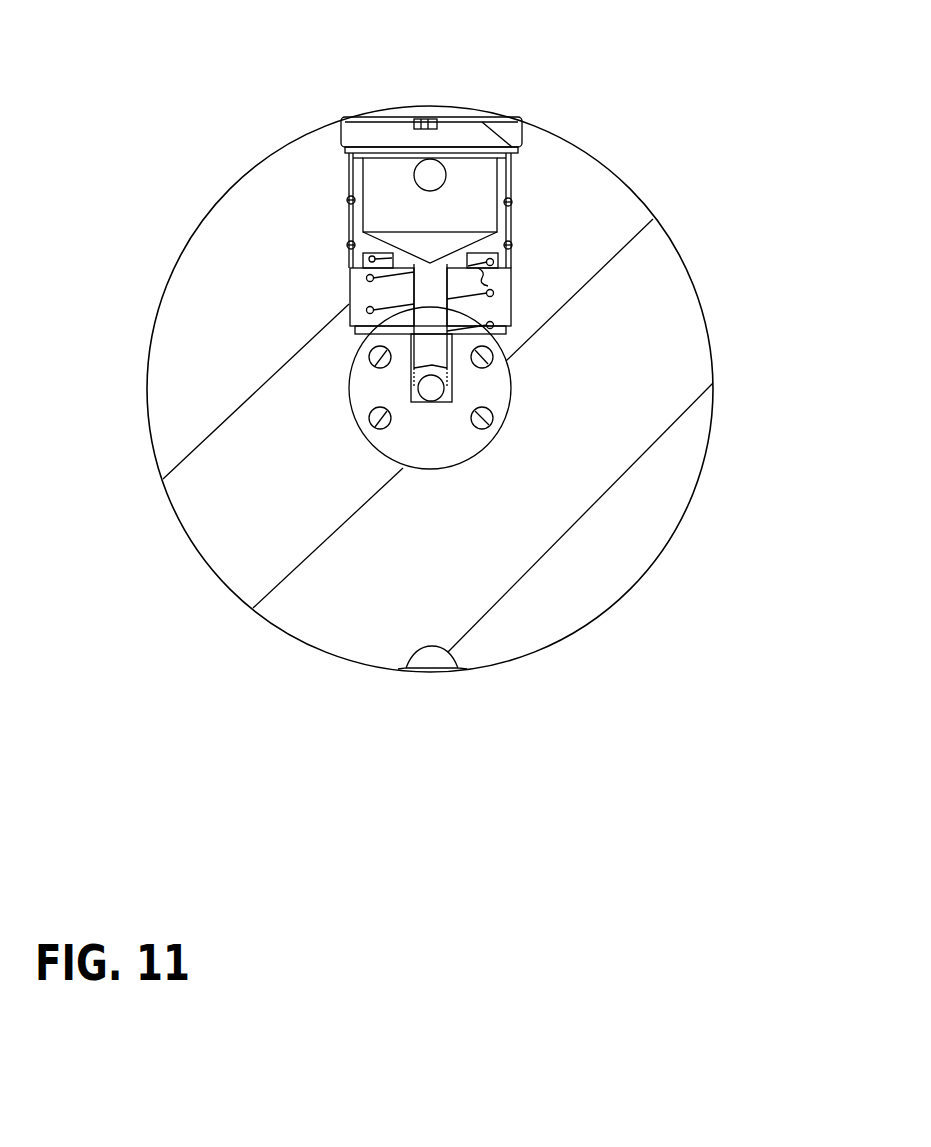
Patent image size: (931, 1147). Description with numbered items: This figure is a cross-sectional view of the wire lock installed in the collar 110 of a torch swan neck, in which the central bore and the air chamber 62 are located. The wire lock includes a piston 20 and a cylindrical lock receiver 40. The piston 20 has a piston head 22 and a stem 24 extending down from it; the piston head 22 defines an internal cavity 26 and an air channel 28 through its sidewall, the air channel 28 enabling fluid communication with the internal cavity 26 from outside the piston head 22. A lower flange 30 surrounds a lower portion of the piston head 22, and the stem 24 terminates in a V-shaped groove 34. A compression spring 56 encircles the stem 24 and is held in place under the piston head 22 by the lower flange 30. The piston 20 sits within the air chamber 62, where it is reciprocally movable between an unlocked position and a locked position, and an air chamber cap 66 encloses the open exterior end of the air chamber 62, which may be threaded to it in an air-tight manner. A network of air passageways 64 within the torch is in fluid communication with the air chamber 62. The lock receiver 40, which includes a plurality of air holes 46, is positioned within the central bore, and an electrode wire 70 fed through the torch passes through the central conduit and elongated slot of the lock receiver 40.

The piston 20 is at (340, 176).
The piston head 22 is at (350, 219).
The stem 24 is at (355, 322).
The internal cavity 26 is at (406, 204).
The air channel 28 is at (418, 165).
The lower flange 30 is at (350, 283).
The V-shaped groove 34 is at (418, 390).
The lock receiver 40 is at (355, 441).
The air holes 46 is at (485, 357).
The compression spring 56 is at (492, 293).
The air chamber 62 is at (488, 271).
The air passageways 64 is at (434, 185).
The air chamber cap 66 is at (462, 126).
The electrode wire 70 is at (428, 370).
The collar 110 is at (703, 465).